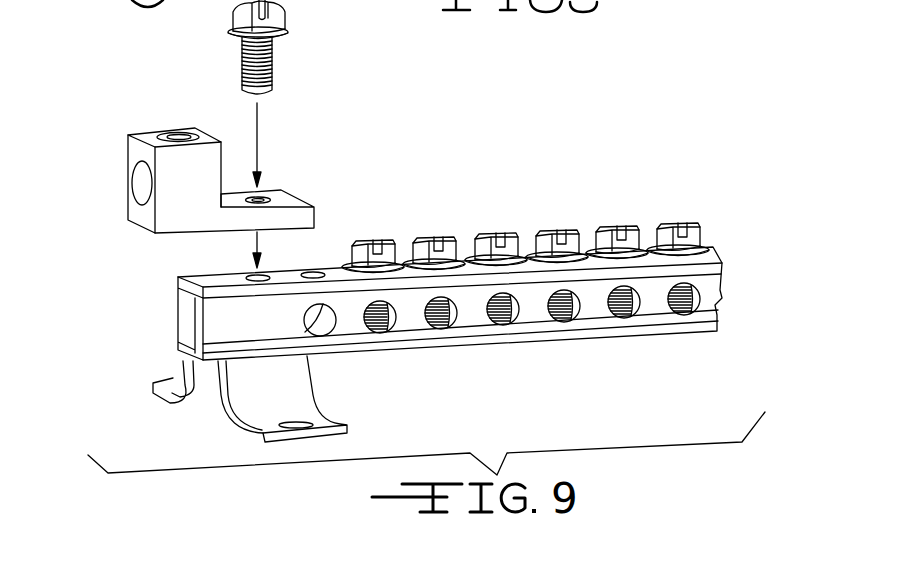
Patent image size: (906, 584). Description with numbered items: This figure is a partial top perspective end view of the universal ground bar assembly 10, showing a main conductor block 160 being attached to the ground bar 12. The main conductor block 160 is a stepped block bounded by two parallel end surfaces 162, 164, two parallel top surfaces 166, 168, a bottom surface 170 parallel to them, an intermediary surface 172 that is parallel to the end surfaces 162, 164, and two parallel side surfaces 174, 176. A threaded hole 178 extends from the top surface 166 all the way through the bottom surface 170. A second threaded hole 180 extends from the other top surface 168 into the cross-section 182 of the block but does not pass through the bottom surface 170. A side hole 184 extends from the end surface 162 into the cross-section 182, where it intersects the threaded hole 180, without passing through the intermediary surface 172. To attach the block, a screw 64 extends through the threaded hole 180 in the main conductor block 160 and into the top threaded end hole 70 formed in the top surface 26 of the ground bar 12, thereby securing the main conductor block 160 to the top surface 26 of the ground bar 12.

The universal ground bar assembly 10 is at (369, 308).
The ground bar 12 is at (450, 267).
The top surface 26 is at (200, 278).
The screw 64 is at (280, 11).
The top threaded end hole 70 is at (249, 271).
The main conductor block 160 is at (205, 170).
The end surface 162 is at (127, 205).
The end surface 164 is at (316, 208).
The top surface 166 is at (145, 132).
The top surface 168 is at (278, 199).
The bottom surface 170 is at (192, 235).
The intermediary surface 172 is at (230, 164).
The side surface 174 is at (175, 208).
The side surface 176 is at (127, 172).
The threaded hole 178 is at (172, 128).
The threaded hole 180 is at (259, 199).
The cross-section 182 is at (277, 213).
The side hole 184 is at (142, 178).